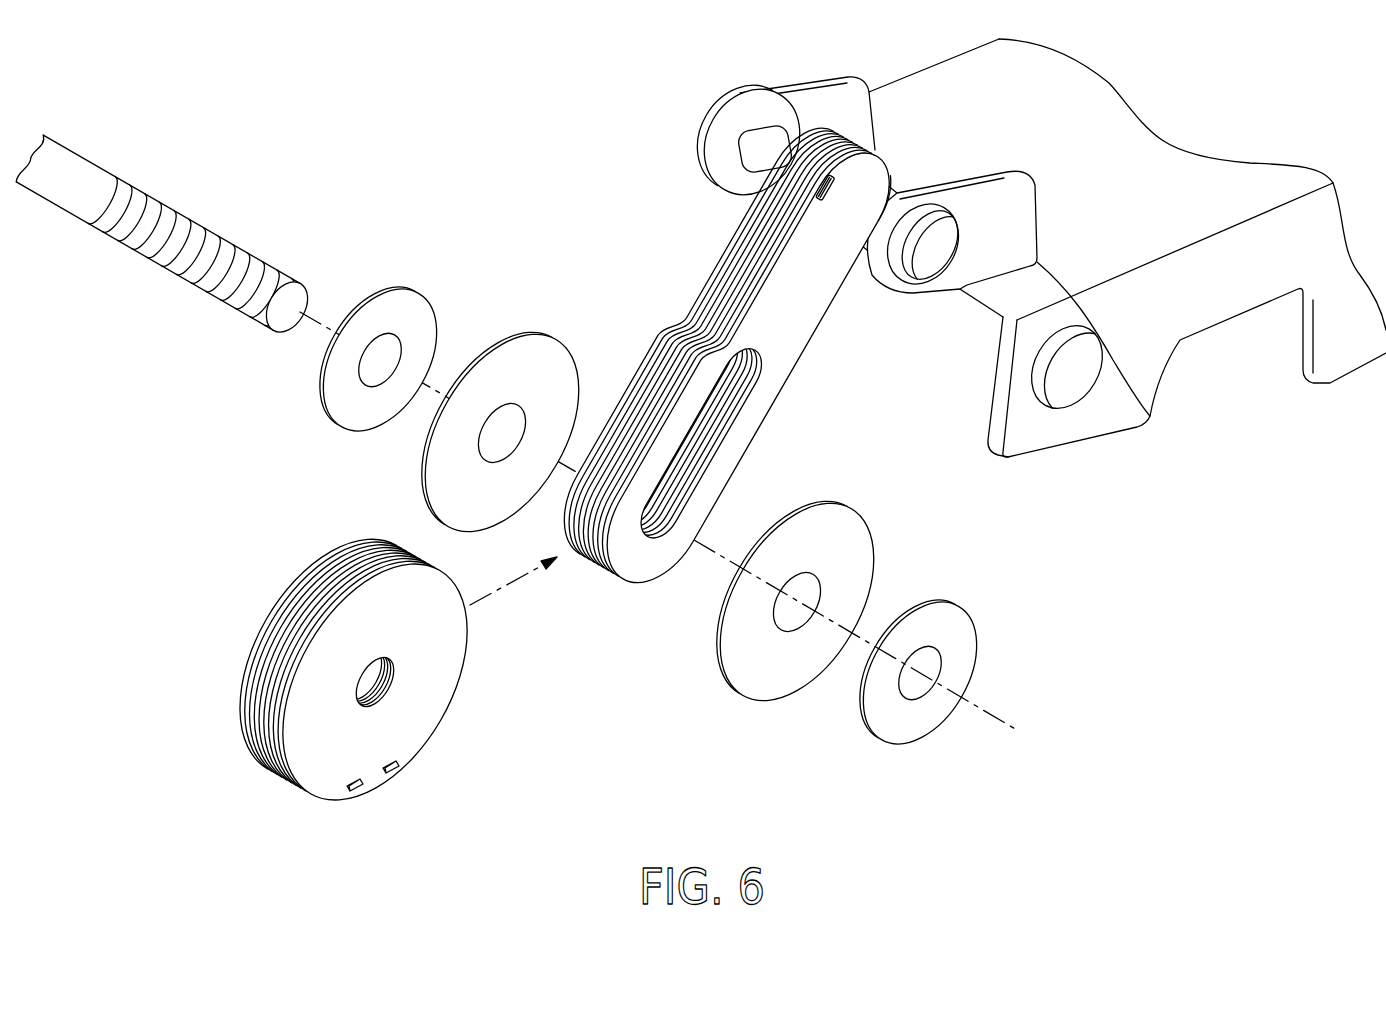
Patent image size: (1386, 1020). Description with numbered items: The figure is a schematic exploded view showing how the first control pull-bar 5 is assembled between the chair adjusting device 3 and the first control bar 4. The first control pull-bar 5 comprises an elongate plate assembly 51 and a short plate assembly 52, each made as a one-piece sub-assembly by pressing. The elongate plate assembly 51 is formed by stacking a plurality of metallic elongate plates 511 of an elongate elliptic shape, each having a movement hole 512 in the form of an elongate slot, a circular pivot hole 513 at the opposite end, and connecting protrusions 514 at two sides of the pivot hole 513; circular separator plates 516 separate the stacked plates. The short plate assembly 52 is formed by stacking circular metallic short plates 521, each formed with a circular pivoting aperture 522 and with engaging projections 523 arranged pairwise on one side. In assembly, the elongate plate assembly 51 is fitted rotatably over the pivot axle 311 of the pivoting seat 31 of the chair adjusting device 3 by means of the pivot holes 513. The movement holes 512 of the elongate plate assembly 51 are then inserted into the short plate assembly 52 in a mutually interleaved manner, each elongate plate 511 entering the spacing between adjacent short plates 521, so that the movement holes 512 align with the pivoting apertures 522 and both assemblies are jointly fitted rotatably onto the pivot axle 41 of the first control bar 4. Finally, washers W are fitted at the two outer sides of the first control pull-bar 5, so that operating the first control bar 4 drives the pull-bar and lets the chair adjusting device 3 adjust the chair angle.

The chair adjusting device 3 is at (1002, 248).
The pivoting seat 31 is at (1010, 235).
The pivot axle 311 is at (720, 187).
The first control bar 4 is at (158, 257).
The pivot axle 41 is at (153, 253).
The first control pull-bar 5 is at (592, 439).
The elongate plate assembly 51 is at (756, 323).
The elongate plate 511 is at (805, 328).
The movement hole 512 is at (735, 412).
The pivot hole 513 is at (885, 170).
The connecting protrusion 514 is at (830, 180).
The separator plate 516 is at (797, 127).
The short plate assembly 52 is at (362, 693).
The short plate 521 is at (445, 661).
The pivoting aperture 522 is at (388, 683).
The engaging projection 523 is at (360, 787).
The washer W is at (345, 398).